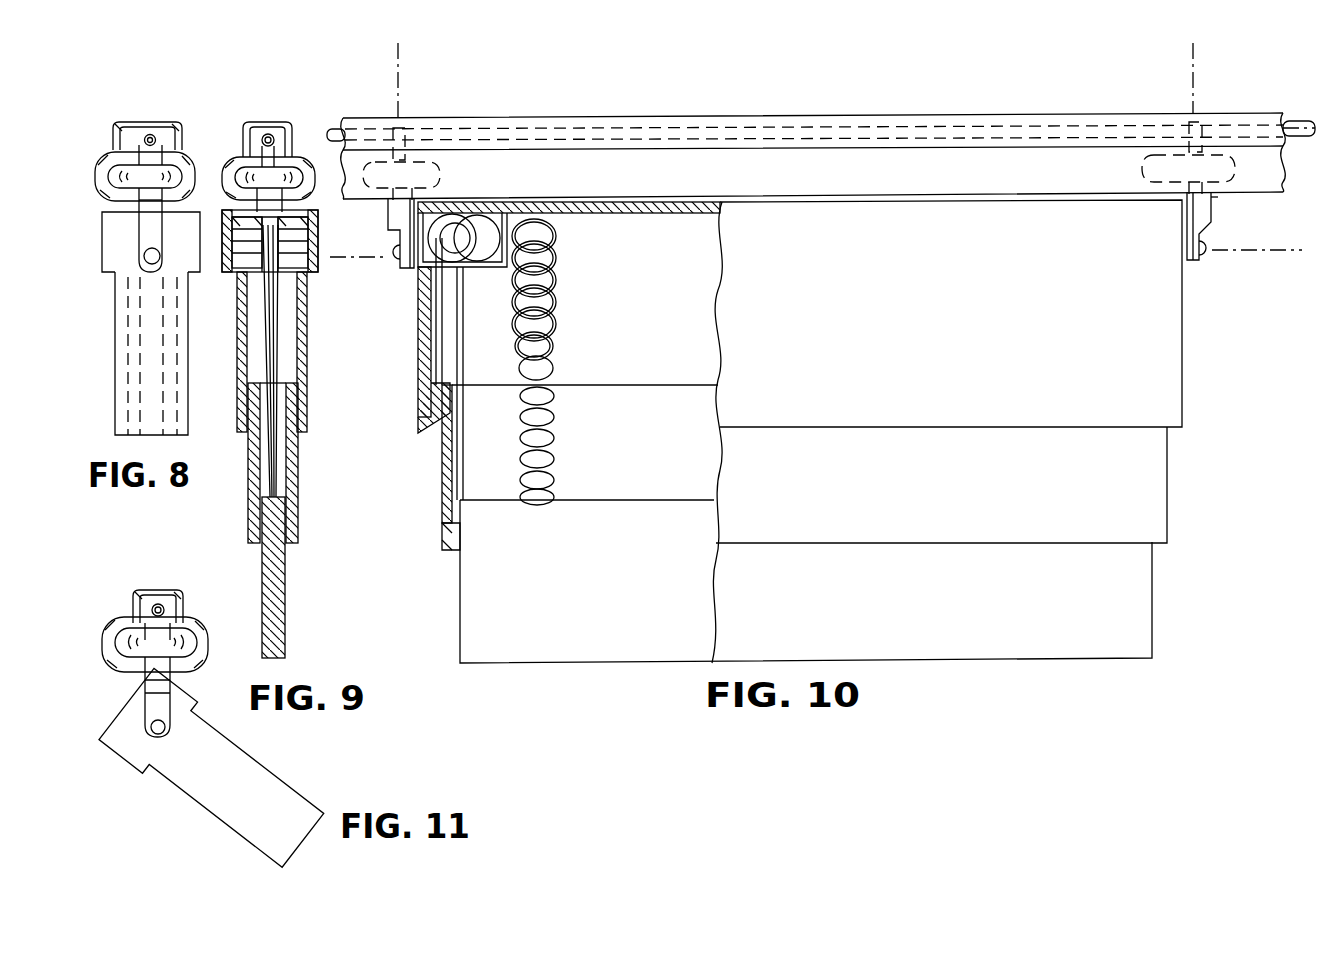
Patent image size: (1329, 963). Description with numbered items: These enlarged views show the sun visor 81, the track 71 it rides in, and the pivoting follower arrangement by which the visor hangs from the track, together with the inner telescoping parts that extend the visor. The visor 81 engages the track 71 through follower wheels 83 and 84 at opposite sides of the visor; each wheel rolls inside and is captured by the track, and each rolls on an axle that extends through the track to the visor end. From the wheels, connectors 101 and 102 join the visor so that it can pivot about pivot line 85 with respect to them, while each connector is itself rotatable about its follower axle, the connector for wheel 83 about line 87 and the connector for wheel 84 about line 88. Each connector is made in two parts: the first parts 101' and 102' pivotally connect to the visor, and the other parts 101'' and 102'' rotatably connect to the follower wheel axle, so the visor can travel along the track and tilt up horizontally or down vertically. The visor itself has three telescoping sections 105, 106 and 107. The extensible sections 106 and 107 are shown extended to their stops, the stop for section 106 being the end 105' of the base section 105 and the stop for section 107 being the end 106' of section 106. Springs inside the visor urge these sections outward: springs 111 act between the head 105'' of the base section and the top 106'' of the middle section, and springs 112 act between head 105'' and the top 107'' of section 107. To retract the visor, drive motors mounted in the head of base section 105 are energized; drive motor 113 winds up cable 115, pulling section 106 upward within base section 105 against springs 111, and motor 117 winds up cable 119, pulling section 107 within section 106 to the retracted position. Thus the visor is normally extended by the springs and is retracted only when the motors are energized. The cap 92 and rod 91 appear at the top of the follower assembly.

In FIG. 8, the rail 71 is at (105, 160).
In FIG. 11, the rail 71 is at (107, 628).
In FIG. 10, the rail 71 is at (748, 167).
In FIG. 8, the visor 81 is at (105, 353).
In FIG. 9, the visor 81 is at (312, 452).
In FIG. 11, the visor 81 is at (132, 790).
In FIG. 10, the visor 81 is at (426, 461).
In FIG. 8, the follower wheel 83 is at (112, 178).
In FIG. 9, the follower wheel 83 is at (236, 153).
In FIG. 11, the follower wheel 83 is at (115, 650).
In FIG. 10, the follower wheel 83 is at (447, 152).
In FIG. 10, the follower wheel 84 is at (1144, 132).
In FIG. 10, the pivot line 85 is at (370, 260).
In FIG. 10, the line 87 is at (404, 73).
In FIG. 10, the line 88 is at (1196, 67).
In FIG. 8, the rod 91 is at (145, 140).
In FIG. 11, the rod 91 is at (152, 609).
In FIG. 10, the rod 91 is at (330, 128).
In FIG. 8, the cap 92 is at (129, 118).
In FIG. 11, the cap 92 is at (134, 594).
In FIG. 10, the cap 92 is at (563, 118).
In FIG. 8, the connector 101 is at (121, 242).
In FIG. 10, the connector 101 is at (378, 233).
In FIG. 8, the first part of connector 101' is at (104, 260).
In FIG. 10, the first part of connector 101' is at (396, 252).
In FIG. 8, the other part of connector 101'' is at (100, 206).
In FIG. 10, the connector 102 is at (1234, 226).
In FIG. 10, the first part of connector 102' is at (1213, 266).
In FIG. 10, the other part of connector 102'' is at (1248, 209).
In FIG. 8, the base section 105 is at (124, 353).
In FIG. 9, the base section 105 is at (294, 352).
In FIG. 10, the base section 105 is at (807, 431).
In FIG. 10, the end of base section 105' is at (406, 408).
In FIG. 10, the head of base section 105'' is at (569, 220).
In FIG. 8, the extensible section 106 is at (106, 356).
In FIG. 9, the extensible section 106 is at (302, 463).
In FIG. 10, the extensible section 106 is at (803, 464).
In FIG. 10, the end of section 106' is at (420, 536).
In FIG. 10, the top of section 106'' is at (585, 365).
In FIG. 8, the extensible section 107 is at (117, 356).
In FIG. 9, the extensible section 107 is at (302, 577).
In FIG. 10, the extensible section 107 is at (806, 581).
In FIG. 10, the top of section 107'' is at (587, 481).
In FIG. 10, the springs 111 is at (558, 323).
In FIG. 10, the springs 112 is at (553, 462).
In FIG. 10, the drive motor 113 is at (446, 213).
In FIG. 10, the cable 115 is at (426, 312).
In FIG. 10, the motor 117 is at (483, 223).
In FIG. 10, the cable 119 is at (457, 442).